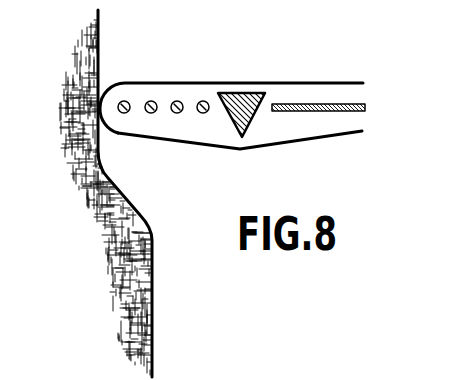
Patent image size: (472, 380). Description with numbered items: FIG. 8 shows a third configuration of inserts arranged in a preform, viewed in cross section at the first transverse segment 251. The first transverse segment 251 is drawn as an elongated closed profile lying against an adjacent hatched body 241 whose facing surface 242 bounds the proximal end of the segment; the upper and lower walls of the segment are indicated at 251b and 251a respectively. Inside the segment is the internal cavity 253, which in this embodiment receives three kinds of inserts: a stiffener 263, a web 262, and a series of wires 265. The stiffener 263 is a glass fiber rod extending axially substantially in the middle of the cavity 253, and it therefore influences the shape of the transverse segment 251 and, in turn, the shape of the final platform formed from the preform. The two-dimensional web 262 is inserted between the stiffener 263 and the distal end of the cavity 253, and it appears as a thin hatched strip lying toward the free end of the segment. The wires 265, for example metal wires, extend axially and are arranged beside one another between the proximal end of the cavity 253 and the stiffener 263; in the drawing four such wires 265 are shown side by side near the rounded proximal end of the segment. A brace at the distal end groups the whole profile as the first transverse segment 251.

The wall 241 is at (152, 306).
The wall surface 242 is at (101, 28).
The first transverse segment 251 is at (270, 116).
The lower surface of flat cable 251a is at (221, 148).
The upper surface of flat cable 251b is at (175, 81).
The internal cavity 253 is at (275, 128).
The web 262 is at (320, 102).
The stiffener 263 is at (247, 107).
The wires 265 is at (203, 114).